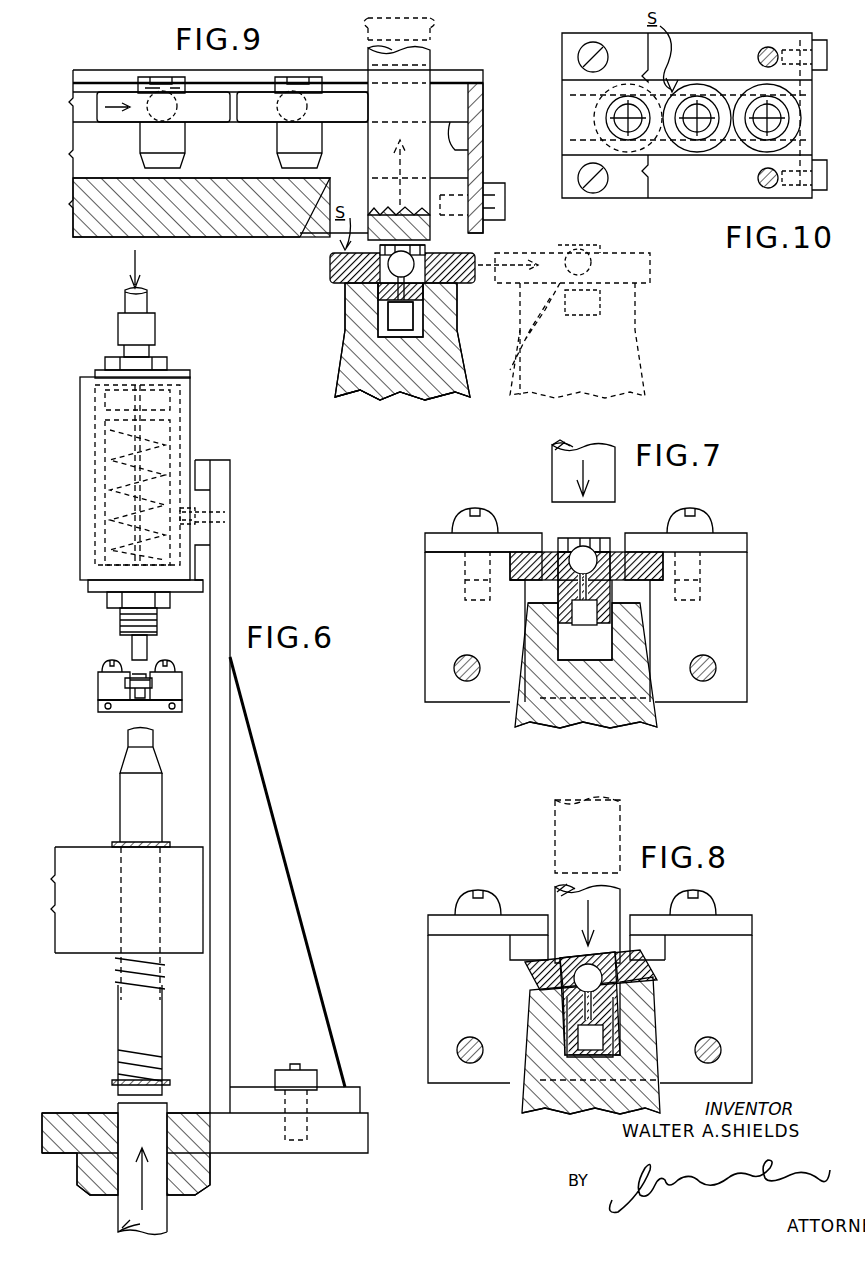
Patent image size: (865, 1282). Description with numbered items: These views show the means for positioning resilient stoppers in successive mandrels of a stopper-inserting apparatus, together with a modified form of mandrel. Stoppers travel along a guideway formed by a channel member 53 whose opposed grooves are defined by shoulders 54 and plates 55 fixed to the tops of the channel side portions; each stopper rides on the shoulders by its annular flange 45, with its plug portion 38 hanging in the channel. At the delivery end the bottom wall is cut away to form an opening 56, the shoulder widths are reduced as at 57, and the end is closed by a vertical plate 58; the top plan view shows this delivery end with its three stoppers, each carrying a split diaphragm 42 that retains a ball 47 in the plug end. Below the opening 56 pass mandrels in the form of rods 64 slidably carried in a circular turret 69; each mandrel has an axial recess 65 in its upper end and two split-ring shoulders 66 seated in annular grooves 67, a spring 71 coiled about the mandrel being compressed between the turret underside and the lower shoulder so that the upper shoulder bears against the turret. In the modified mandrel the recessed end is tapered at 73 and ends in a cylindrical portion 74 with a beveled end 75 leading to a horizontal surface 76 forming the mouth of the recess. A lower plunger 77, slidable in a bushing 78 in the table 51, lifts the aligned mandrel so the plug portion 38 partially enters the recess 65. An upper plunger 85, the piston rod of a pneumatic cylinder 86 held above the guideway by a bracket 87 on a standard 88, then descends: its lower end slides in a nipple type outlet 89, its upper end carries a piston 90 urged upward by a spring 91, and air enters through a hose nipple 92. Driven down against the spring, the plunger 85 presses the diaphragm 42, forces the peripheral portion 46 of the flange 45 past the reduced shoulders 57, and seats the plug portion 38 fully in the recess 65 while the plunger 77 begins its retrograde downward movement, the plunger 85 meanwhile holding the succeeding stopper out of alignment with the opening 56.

In FIG. 9, the plug portion 38 is at (272, 150).
In FIG. 6, the plug portion 38 is at (152, 698).
In FIG. 8, the plug portion 38 is at (565, 1020).
In FIG. 9, the diaphragm 42 is at (580, 252).
In FIG. 7, the diaphragm 42 is at (558, 535).
In FIG. 9, the annular flange 45 is at (430, 258).
In FIG. 7, the annular flange 45 is at (618, 545).
In FIG. 8, the annular flange 45 is at (625, 945).
In FIG. 9, the peripheral portion of the flange 46 is at (210, 112).
In FIG. 7, the peripheral portion of the flange 46 is at (512, 582).
In FIG. 9, the ball 47 is at (585, 255).
In FIG. 7, the ball 47 is at (590, 535).
In FIG. 8, the ball 47 is at (588, 992).
In FIG. 6, the table 51 is at (378, 1145).
In FIG. 9, the channel member 53 is at (95, 237).
In FIG. 10, the channel member 53 is at (676, 185).
In FIG. 6, the channel member 53 is at (98, 687).
In FIG. 7, the channel member 53 is at (748, 612).
In FIG. 8, the channel member 53 is at (755, 975).
In FIG. 9, the shoulders 54 is at (73, 112).
In FIG. 10, the shoulders 54 is at (725, 152).
In FIG. 9, the plate 55 is at (476, 80).
In FIG. 6, the plate 55 is at (176, 676).
In FIG. 7, the plate 55 is at (728, 538).
In FIG. 8, the plate 55 is at (735, 915).
In FIG. 6, the opening 56 is at (120, 712).
In FIG. 7, the opening 56 is at (535, 670).
In FIG. 8, the opening 56 is at (530, 1070).
In FIG. 9, the reduced shoulders 57 is at (482, 150).
In FIG. 10, the reduced shoulders 57 is at (780, 75).
In FIG. 7, the reduced shoulders 57 is at (660, 590).
In FIG. 8, the reduced shoulders 57 is at (515, 960).
In FIG. 9, the vertical plate 58 is at (482, 127).
In FIG. 10, the vertical plate 58 is at (808, 105).
In FIG. 9, the mandrel 64 is at (435, 400).
In FIG. 6, the mandrel 64 is at (152, 794).
In FIG. 7, the mandrel 64 is at (520, 430).
In FIG. 9, the axial recess 65 is at (380, 345).
In FIG. 6, the axial recess 65 is at (145, 752).
In FIG. 7, the axial recess 65 is at (610, 690).
In FIG. 8, the axial recess 65 is at (590, 1060).
In FIG. 6, the split ring shoulder 66 is at (157, 842).
In FIG. 6, the annular groove 67 is at (130, 835).
In FIG. 6, the circular turret 69 is at (90, 945).
In FIG. 6, the spring 71 is at (115, 1050).
In FIG. 9, the tapered end 73 is at (465, 385).
In FIG. 6, the tapered end 73 is at (156, 758).
In FIG. 7, the tapered end 73 is at (657, 715).
In FIG. 9, the cylindrical portion 74 is at (345, 305).
In FIG. 6, the cylindrical portion 74 is at (128, 745).
In FIG. 7, the cylindrical portion 74 is at (528, 660).
In FIG. 8, the cylindrical portion 74 is at (530, 1050).
In FIG. 9, the beveled end 75 is at (345, 290).
In FIG. 6, the beveled end 75 is at (128, 738).
In FIG. 7, the beveled end 75 is at (540, 612).
In FIG. 8, the beveled end 75 is at (540, 990).
In FIG. 9, the horizontal surface 76 is at (430, 310).
In FIG. 7, the horizontal surface 76 is at (640, 620).
In FIG. 8, the horizontal surface 76 is at (620, 1025).
In FIG. 6, the plunger 77 is at (167, 1222).
In FIG. 6, the bushing 78 is at (118, 1110).
In FIG. 9, the plunger 85 is at (395, 50).
In FIG. 6, the plunger 85 is at (132, 648).
In FIG. 7, the plunger 85 is at (552, 474).
In FIG. 8, the plunger 85 is at (555, 825).
In FIG. 6, the cylinder 86 is at (80, 548).
In FIG. 6, the bracket 87 is at (200, 470).
In FIG. 6, the standard 88 is at (265, 935).
In FIG. 6, the nipple type outlet 89 is at (157, 622).
In FIG. 6, the piston 90 is at (102, 425).
In FIG. 6, the spring 91 is at (110, 508).
In FIG. 6, the hose nipple 92 is at (118, 322).